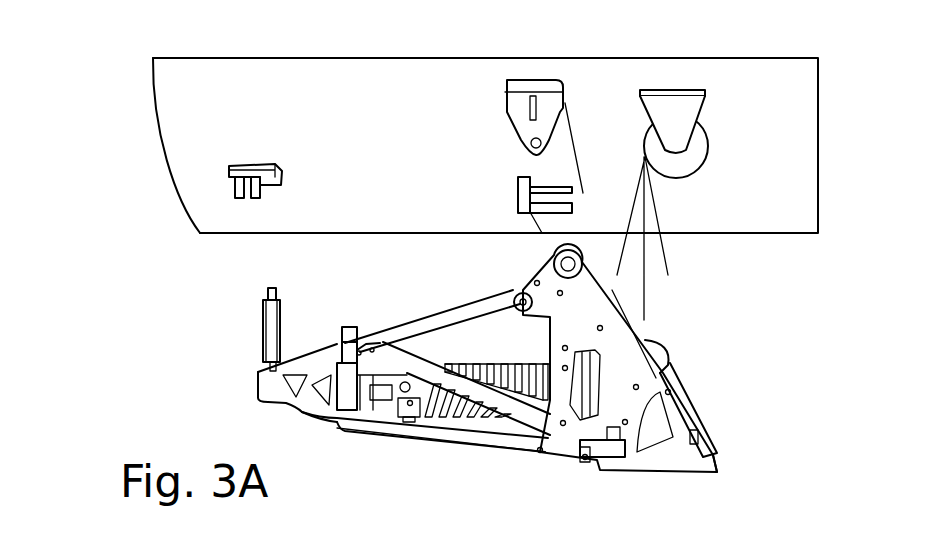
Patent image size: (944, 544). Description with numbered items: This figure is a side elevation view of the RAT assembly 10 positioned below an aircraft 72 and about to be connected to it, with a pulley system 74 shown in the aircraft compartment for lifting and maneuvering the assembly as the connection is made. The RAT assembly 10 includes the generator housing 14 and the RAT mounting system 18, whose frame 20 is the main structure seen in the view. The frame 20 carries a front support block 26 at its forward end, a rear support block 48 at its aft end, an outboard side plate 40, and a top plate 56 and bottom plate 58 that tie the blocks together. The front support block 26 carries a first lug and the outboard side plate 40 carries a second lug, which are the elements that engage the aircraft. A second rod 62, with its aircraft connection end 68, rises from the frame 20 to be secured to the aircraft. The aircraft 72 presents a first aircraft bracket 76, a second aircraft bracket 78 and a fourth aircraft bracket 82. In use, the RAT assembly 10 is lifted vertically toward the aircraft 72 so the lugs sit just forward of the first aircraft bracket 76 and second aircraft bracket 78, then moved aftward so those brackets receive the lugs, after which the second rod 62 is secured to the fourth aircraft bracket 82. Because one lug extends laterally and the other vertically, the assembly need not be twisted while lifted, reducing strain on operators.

The RAT assembly 10 is at (147, 352).
The generator housing 14 is at (754, 292).
The RAT mounting system 18 is at (346, 301).
The frame 20 is at (403, 386).
The front support block 26 is at (643, 348).
The outboard side plate 40 is at (593, 297).
The rear support block 48 is at (292, 410).
The top plate 56 is at (420, 322).
The bottom plate 58 is at (440, 433).
The second rod 62 is at (262, 336).
The aircraft connection end 68 is at (266, 290).
The aircraft 72 is at (162, 130).
The pulley system 74 is at (678, 110).
The first aircraft bracket 76 is at (362, 265).
The second aircraft bracket 78 is at (567, 105).
The fourth aircraft bracket 82 is at (228, 174).